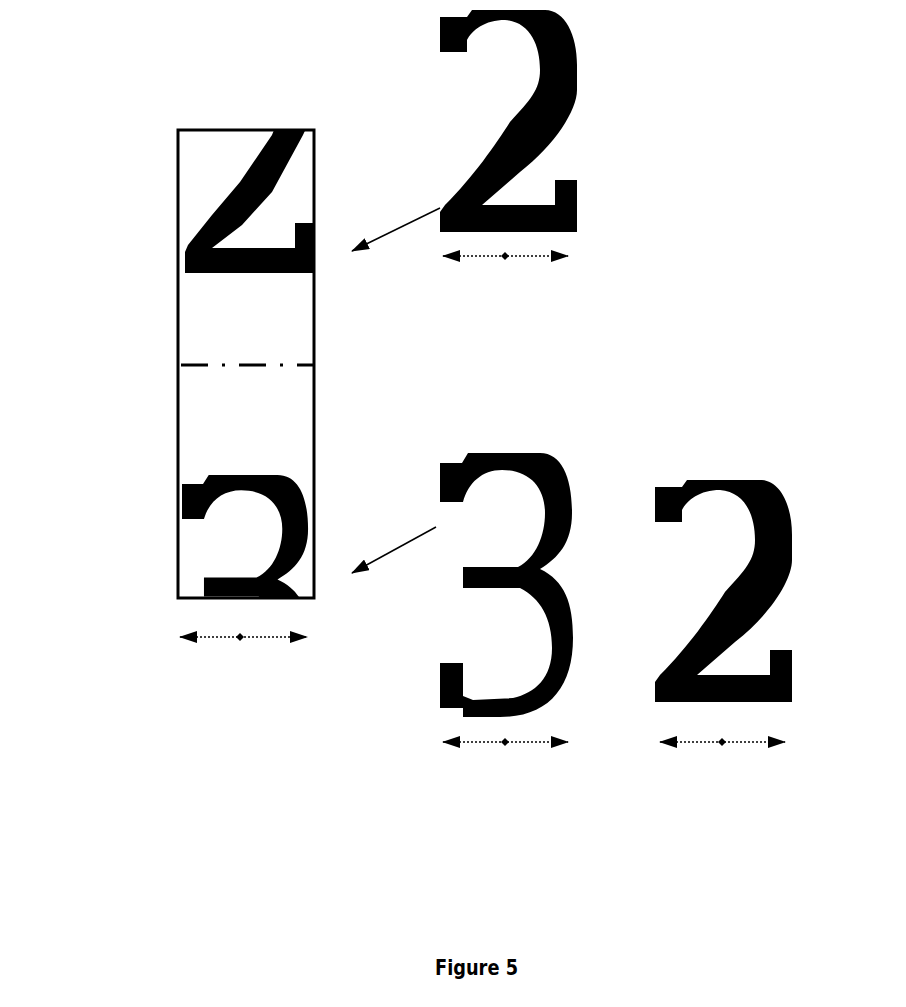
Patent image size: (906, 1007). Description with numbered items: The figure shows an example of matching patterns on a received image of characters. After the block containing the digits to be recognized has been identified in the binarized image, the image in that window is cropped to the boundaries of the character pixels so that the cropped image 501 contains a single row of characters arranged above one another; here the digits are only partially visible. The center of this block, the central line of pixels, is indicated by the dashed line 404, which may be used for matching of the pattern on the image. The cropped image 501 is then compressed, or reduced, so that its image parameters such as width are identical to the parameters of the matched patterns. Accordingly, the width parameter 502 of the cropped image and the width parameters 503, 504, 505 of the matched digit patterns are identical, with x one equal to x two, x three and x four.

The cropped image 501 is at (222, 126).
The dashed line 404 is at (242, 356).
The width parameter x1 502 is at (241, 640).
The width parameter x2 503 is at (506, 745).
The width parameter x3 504 is at (723, 745).
The width parameter x4 505 is at (506, 259).